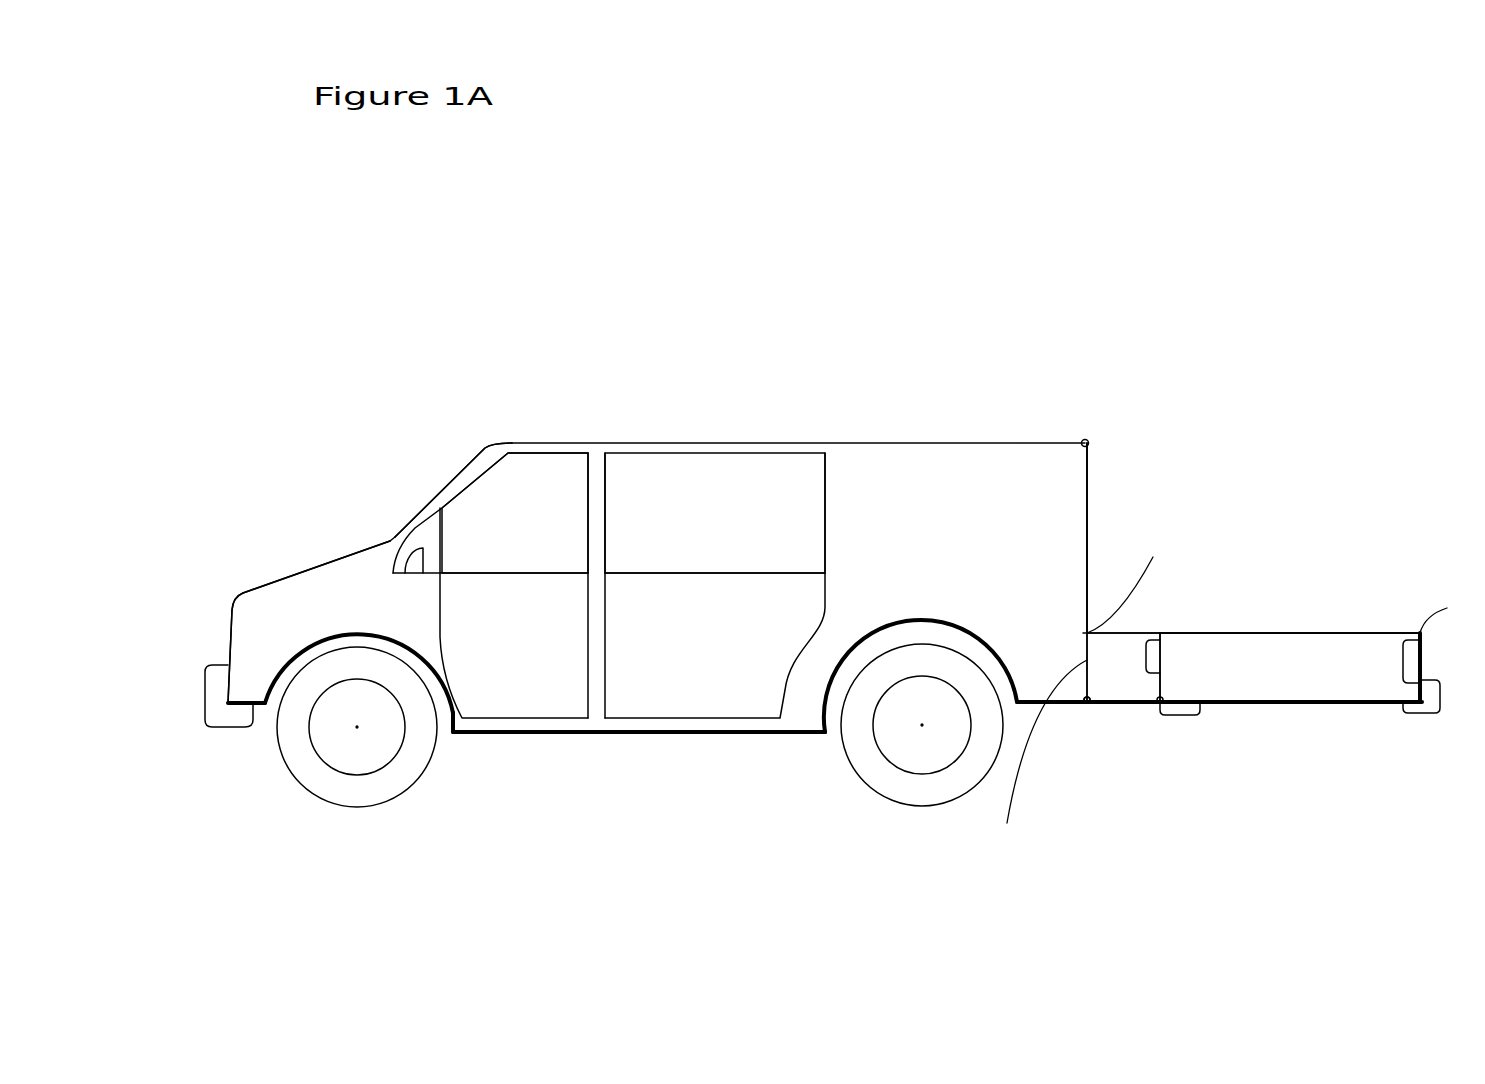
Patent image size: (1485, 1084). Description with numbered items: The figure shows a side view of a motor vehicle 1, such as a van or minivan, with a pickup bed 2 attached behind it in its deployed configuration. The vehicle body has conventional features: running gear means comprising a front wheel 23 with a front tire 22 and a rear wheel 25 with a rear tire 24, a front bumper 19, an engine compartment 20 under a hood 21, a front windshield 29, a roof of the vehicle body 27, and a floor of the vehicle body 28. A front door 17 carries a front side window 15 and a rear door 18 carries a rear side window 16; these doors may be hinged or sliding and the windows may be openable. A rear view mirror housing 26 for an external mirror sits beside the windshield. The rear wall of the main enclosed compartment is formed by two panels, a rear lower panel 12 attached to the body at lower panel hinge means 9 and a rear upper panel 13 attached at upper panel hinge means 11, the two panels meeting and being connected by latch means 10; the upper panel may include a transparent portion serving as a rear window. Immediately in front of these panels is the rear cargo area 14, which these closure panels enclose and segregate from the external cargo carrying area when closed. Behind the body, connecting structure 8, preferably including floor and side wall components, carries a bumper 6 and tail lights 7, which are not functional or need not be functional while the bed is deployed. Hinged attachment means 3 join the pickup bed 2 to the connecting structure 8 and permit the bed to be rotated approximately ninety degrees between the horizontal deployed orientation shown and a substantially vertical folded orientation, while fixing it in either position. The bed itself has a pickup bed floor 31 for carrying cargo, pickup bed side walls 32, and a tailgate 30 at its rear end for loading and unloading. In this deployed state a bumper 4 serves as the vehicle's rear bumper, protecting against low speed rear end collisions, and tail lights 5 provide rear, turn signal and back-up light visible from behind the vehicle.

The motor vehicle 1 is at (445, 400).
The pickup bed 2 is at (1273, 653).
The hinged attachment means 3 is at (1160, 702).
The bumper 4 is at (1425, 703).
The tail lights 5 is at (1417, 663).
The bumper 6 is at (1177, 713).
The tail lights 7 is at (1157, 637).
The connecting structure 8 is at (1110, 678).
The lower panel hinge means 9 is at (1087, 700).
The latch means 10 is at (1133, 581).
The upper panel hinge means 11 is at (1088, 442).
The rear lower panel 12 is at (1041, 756).
The rear upper panel 13 is at (1088, 523).
The rear cargo area 14 is at (1062, 495).
The front side window 15 is at (546, 493).
The rear side window 16 is at (725, 488).
The front door 17 is at (520, 683).
The rear door 18 is at (694, 683).
The front bumper 19 is at (217, 717).
The engine compartment 20 is at (310, 588).
The hood 21 is at (265, 585).
The front tire 22 is at (323, 777).
The front wheel 23 is at (372, 750).
The rear tire 24 is at (885, 782).
The rear wheel 25 is at (927, 753).
The rear view mirror housing 26 is at (418, 562).
The roof of the vehicle body 27 is at (902, 442).
The floor of the vehicle body 28 is at (773, 732).
The front windshield 29 is at (402, 527).
The tailgate 30 is at (1441, 608).
The pickup bed floor 31 is at (1297, 703).
The pickup bed side walls 32 is at (1333, 653).